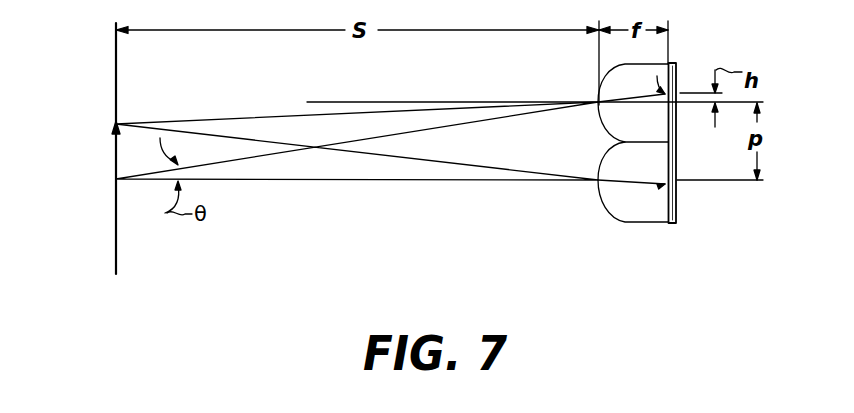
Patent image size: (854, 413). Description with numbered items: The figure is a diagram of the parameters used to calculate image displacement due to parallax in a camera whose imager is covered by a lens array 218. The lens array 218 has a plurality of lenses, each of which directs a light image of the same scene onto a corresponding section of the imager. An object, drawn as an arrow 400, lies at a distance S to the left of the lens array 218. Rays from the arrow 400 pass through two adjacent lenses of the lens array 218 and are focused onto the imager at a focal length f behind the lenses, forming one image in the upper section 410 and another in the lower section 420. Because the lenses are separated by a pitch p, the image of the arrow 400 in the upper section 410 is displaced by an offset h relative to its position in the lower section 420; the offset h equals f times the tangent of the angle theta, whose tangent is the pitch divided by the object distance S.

The arrow 400 is at (116, 237).
The lens array 218 is at (634, 222).
The upper section 410 is at (672, 64).
The lower section 420 is at (664, 184).